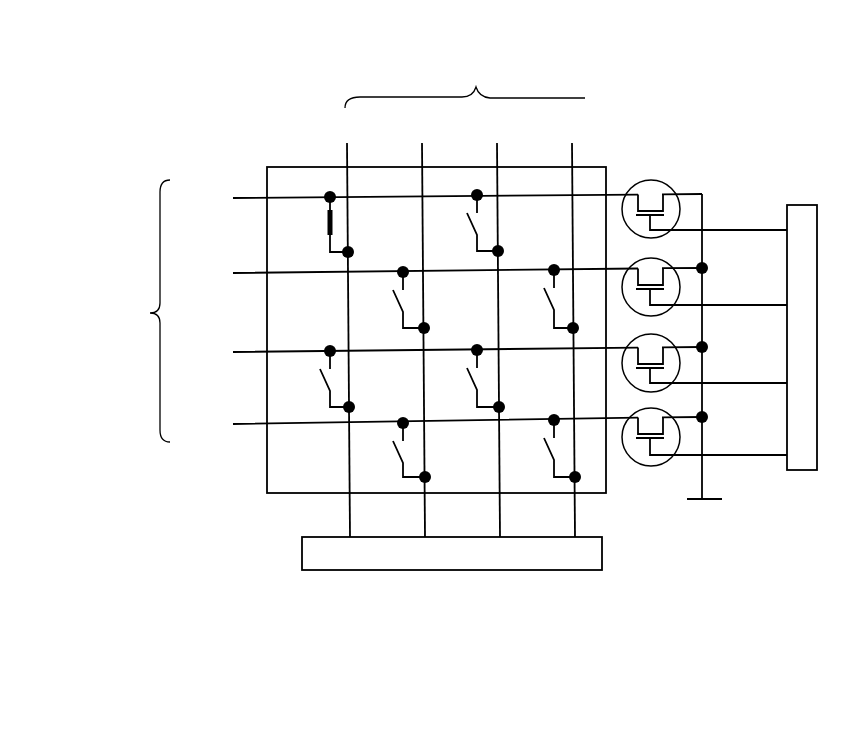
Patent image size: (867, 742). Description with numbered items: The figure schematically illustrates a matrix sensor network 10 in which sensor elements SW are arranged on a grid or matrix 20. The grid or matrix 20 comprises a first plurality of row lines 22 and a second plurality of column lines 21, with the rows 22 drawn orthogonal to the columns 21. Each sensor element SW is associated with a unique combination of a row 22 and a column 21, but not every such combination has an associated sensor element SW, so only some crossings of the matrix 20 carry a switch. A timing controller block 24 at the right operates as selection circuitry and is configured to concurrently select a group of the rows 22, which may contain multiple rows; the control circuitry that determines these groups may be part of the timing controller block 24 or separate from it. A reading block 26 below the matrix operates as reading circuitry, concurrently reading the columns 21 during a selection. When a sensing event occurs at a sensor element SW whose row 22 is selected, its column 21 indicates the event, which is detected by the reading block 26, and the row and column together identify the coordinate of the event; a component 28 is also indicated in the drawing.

The matrix sensor network 10 is at (195, 620).
The grid or matrix 20 is at (587, 185).
The column lines 21 is at (412, 37).
The row lines 22 is at (85, 313).
The timing controller block 24 is at (810, 472).
The reading block 26 is at (363, 575).
The pixel switch 28 is at (288, 188).